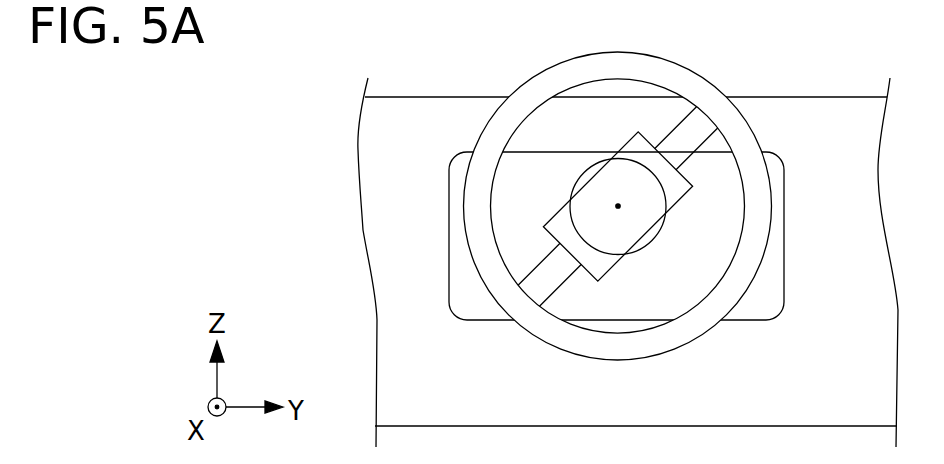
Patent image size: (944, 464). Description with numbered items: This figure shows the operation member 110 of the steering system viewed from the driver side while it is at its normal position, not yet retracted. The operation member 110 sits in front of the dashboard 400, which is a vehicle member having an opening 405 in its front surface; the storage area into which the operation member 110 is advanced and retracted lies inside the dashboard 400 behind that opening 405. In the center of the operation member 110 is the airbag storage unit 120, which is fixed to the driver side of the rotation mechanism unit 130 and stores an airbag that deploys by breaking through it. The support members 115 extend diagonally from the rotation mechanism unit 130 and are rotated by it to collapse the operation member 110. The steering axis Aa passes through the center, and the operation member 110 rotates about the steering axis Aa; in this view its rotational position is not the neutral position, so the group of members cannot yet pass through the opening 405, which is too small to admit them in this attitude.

The operation member 110 is at (543, 72).
The support members 115 is at (687, 127).
The airbag storage unit 120 is at (607, 245).
The rotation mechanism unit 130 is at (623, 136).
The dashboard 400 is at (457, 97).
The opening 405 is at (453, 194).
The steering axis Aa is at (619, 205).